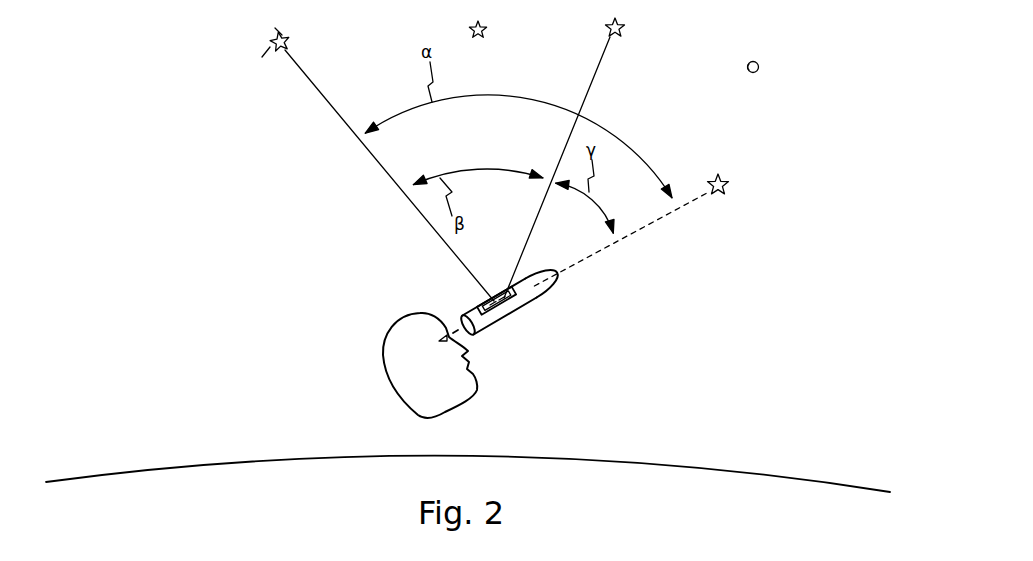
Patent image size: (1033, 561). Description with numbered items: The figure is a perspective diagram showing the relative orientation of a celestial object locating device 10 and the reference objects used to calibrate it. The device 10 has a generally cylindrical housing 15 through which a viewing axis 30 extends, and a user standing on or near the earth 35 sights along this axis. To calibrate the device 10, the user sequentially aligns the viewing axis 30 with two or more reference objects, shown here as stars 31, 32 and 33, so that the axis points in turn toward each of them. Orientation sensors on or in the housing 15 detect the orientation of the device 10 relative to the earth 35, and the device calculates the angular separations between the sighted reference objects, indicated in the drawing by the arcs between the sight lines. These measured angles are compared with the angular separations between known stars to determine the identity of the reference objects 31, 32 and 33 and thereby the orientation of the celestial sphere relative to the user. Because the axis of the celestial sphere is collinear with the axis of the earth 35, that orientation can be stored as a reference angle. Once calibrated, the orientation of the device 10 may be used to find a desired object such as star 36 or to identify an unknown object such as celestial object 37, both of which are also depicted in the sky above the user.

The celestial object locating device 10 is at (539, 302).
The housing 15 is at (466, 312).
The viewing axis 30 is at (613, 243).
The star 31 is at (730, 186).
The star 32 is at (603, 27).
The star 33 is at (275, 53).
The earth 35 is at (580, 460).
The star 36 is at (469, 29).
The object 37 is at (746, 66).